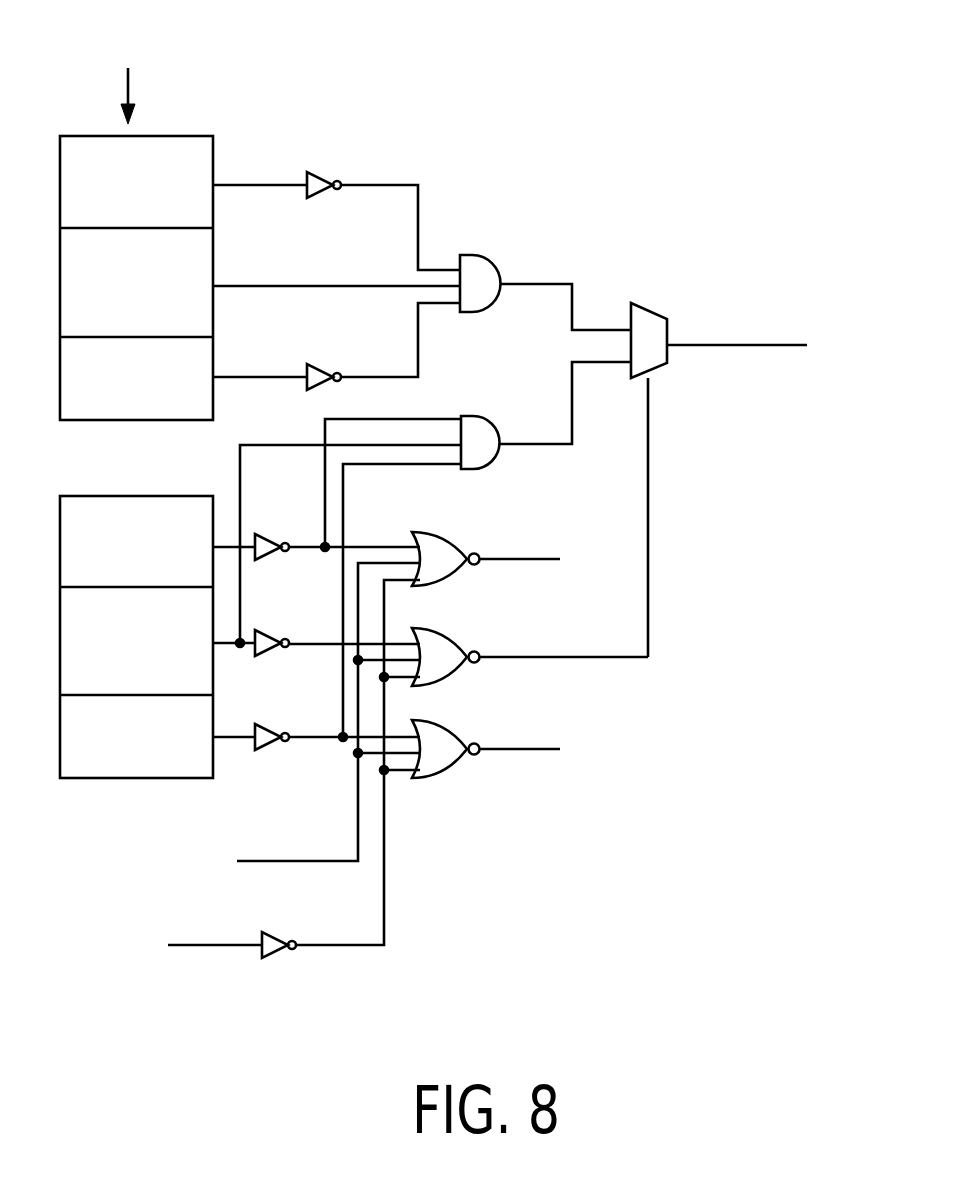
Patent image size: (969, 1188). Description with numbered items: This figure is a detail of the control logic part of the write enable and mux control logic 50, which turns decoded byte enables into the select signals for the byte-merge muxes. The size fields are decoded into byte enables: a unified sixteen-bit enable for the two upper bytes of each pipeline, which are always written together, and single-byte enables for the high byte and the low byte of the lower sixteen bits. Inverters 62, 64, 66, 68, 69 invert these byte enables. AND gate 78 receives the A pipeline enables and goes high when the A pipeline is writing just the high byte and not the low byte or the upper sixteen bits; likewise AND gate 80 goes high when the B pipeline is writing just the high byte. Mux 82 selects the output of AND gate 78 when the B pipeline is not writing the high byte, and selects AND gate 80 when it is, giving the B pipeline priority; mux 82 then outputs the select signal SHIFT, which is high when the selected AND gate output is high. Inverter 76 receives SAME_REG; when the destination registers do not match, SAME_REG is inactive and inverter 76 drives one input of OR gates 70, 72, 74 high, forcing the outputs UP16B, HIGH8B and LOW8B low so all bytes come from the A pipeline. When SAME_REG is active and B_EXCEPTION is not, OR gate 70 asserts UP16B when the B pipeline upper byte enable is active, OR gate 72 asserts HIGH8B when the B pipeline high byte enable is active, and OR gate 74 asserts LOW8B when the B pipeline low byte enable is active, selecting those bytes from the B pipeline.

The write enable and mux control logic 50 is at (744, 828).
The inverter 62 is at (328, 180).
The inverter 64 is at (328, 372).
The inverter 66 is at (277, 540).
The inverter 68 is at (276, 636).
The inverter 69 is at (276, 730).
The OR gate 70 is at (444, 537).
The OR gate 72 is at (443, 635).
The OR gate 74 is at (443, 727).
The inverter 76 is at (283, 936).
The AND gate 78 is at (494, 258).
The AND gate 80 is at (494, 418).
The mux 82 is at (642, 305).